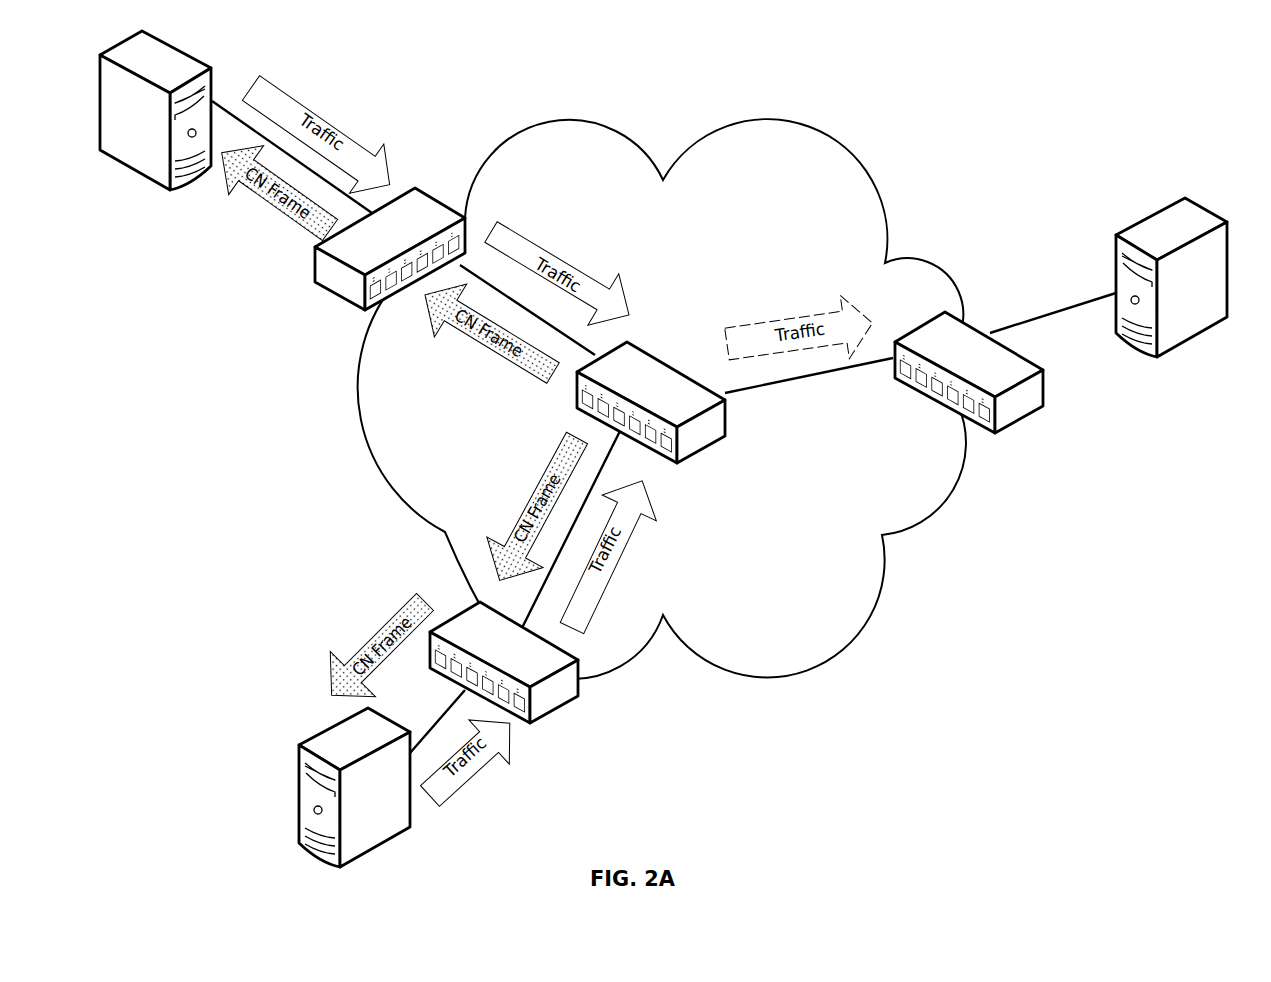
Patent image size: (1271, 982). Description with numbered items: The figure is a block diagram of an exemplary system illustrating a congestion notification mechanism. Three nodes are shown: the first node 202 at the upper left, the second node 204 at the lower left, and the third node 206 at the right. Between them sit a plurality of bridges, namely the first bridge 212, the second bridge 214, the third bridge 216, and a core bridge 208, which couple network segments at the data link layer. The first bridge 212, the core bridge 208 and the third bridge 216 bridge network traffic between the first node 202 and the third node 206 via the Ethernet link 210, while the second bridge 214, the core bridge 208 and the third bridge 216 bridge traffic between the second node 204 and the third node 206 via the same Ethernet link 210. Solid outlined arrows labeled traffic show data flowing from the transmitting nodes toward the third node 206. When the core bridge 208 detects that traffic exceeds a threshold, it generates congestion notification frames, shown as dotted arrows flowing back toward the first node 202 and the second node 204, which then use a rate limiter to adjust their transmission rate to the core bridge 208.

The node 1 202 is at (189, 53).
The node 2 204 is at (388, 843).
The node 3 206 is at (1163, 212).
The core bridge 208 is at (647, 348).
The Ethernet link 210 is at (1062, 308).
The bridge 1 212 is at (437, 202).
The bridge 2 214 is at (545, 720).
The bridge 3 216 is at (1030, 357).